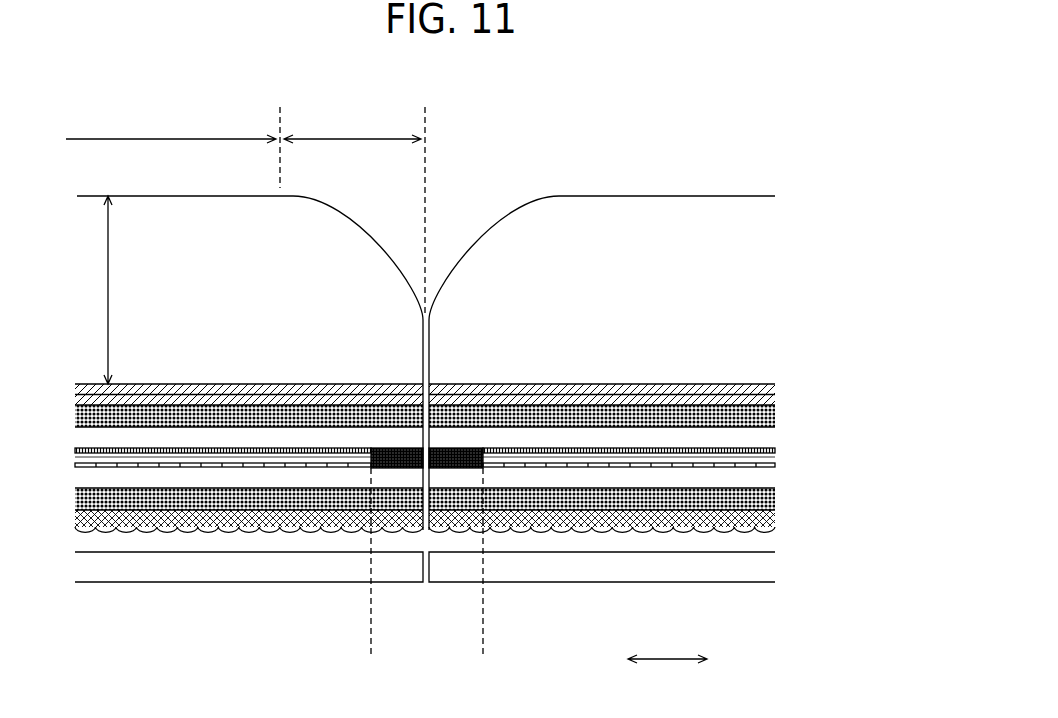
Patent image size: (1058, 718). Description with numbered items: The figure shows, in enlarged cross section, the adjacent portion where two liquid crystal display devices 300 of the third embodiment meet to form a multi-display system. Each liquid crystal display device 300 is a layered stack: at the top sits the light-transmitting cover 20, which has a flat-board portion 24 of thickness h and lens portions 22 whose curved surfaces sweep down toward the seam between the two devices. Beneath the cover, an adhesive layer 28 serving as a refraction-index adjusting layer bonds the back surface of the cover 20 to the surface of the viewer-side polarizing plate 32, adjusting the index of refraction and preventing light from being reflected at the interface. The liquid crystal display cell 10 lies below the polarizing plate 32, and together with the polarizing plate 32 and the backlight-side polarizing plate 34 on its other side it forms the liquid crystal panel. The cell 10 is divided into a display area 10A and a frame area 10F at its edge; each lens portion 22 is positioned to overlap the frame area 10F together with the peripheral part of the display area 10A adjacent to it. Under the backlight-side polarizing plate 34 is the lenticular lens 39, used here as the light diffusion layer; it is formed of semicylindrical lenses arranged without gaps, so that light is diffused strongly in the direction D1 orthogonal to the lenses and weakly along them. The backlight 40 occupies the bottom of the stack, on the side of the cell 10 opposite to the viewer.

The liquid crystal display device 300 is at (778, 150).
The light-transmitting cover 20 is at (757, 315).
The flat-board portion 24 is at (173, 147).
The lens portion 22 is at (354, 210).
The thickness of the flat portion h is at (100, 290).
The adhesive layer 28 is at (775, 390).
The viewer-side polarizing plate 32 is at (775, 413).
The liquid crystal display cell 10 is at (809, 425).
The display area 10A is at (359, 643).
The frame area 10F is at (470, 643).
The backlight-side polarizing plate 34 is at (775, 500).
The lenticular lens 39 is at (775, 517).
The backlight 40 is at (762, 565).
The direction D1 is at (667, 674).